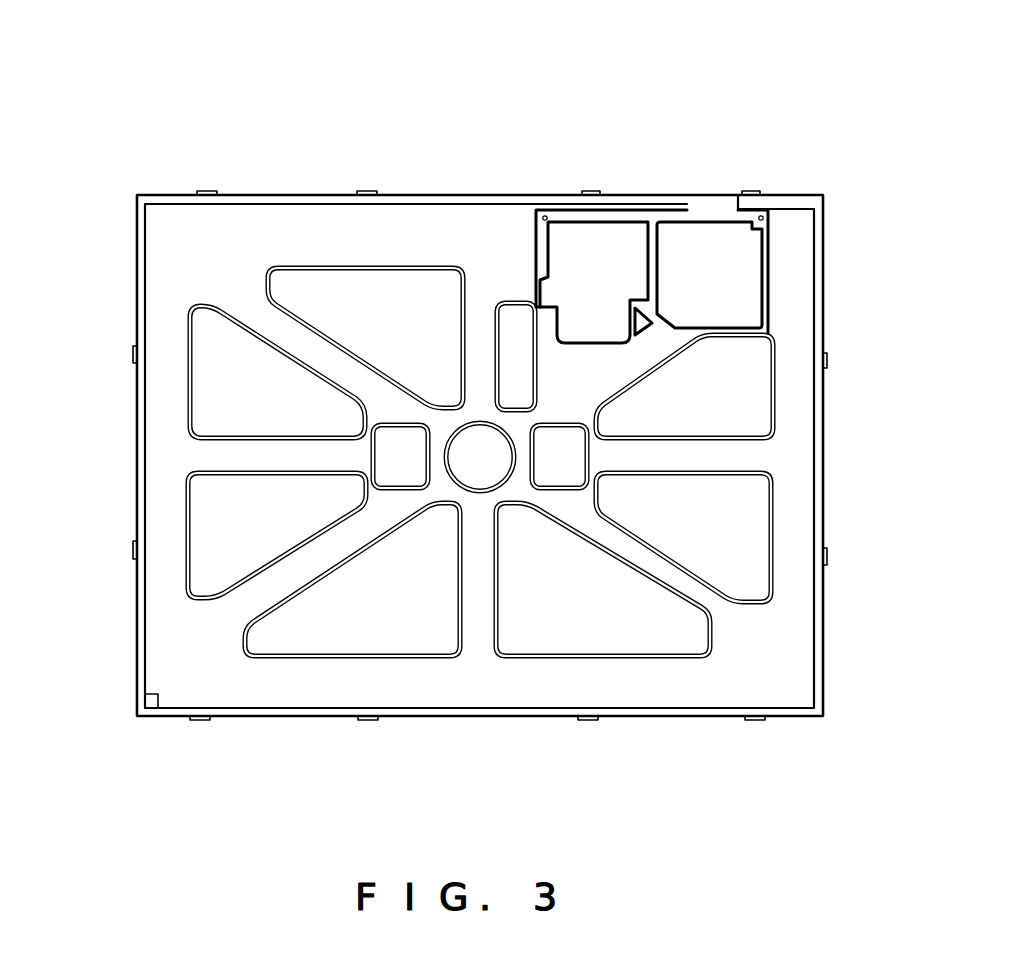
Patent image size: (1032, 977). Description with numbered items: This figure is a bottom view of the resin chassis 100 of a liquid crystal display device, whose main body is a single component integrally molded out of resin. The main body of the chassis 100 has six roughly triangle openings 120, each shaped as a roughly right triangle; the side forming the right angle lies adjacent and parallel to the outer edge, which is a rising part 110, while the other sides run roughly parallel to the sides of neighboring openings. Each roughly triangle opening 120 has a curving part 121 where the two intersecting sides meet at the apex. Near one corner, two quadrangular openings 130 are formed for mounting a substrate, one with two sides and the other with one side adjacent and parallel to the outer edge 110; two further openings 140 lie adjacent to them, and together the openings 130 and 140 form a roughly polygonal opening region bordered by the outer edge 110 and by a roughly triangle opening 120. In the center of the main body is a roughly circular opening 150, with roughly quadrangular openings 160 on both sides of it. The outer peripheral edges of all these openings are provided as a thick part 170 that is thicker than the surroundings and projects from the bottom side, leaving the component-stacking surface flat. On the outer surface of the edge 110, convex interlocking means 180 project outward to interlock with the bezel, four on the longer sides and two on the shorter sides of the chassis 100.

The resin chassis 100 is at (793, 154).
The rising part 110 is at (823, 199).
The roughly triangle opening 120 is at (325, 285).
The curving part 121 is at (458, 265).
The quadrangular opening for mounting a substrate 130 is at (623, 237).
The opening 140 is at (510, 318).
The roughly circular opening 150 is at (485, 467).
The roughly quadrangular opening 160 is at (407, 473).
The thick part 170 is at (393, 270).
The interlocking means 180 is at (208, 192).